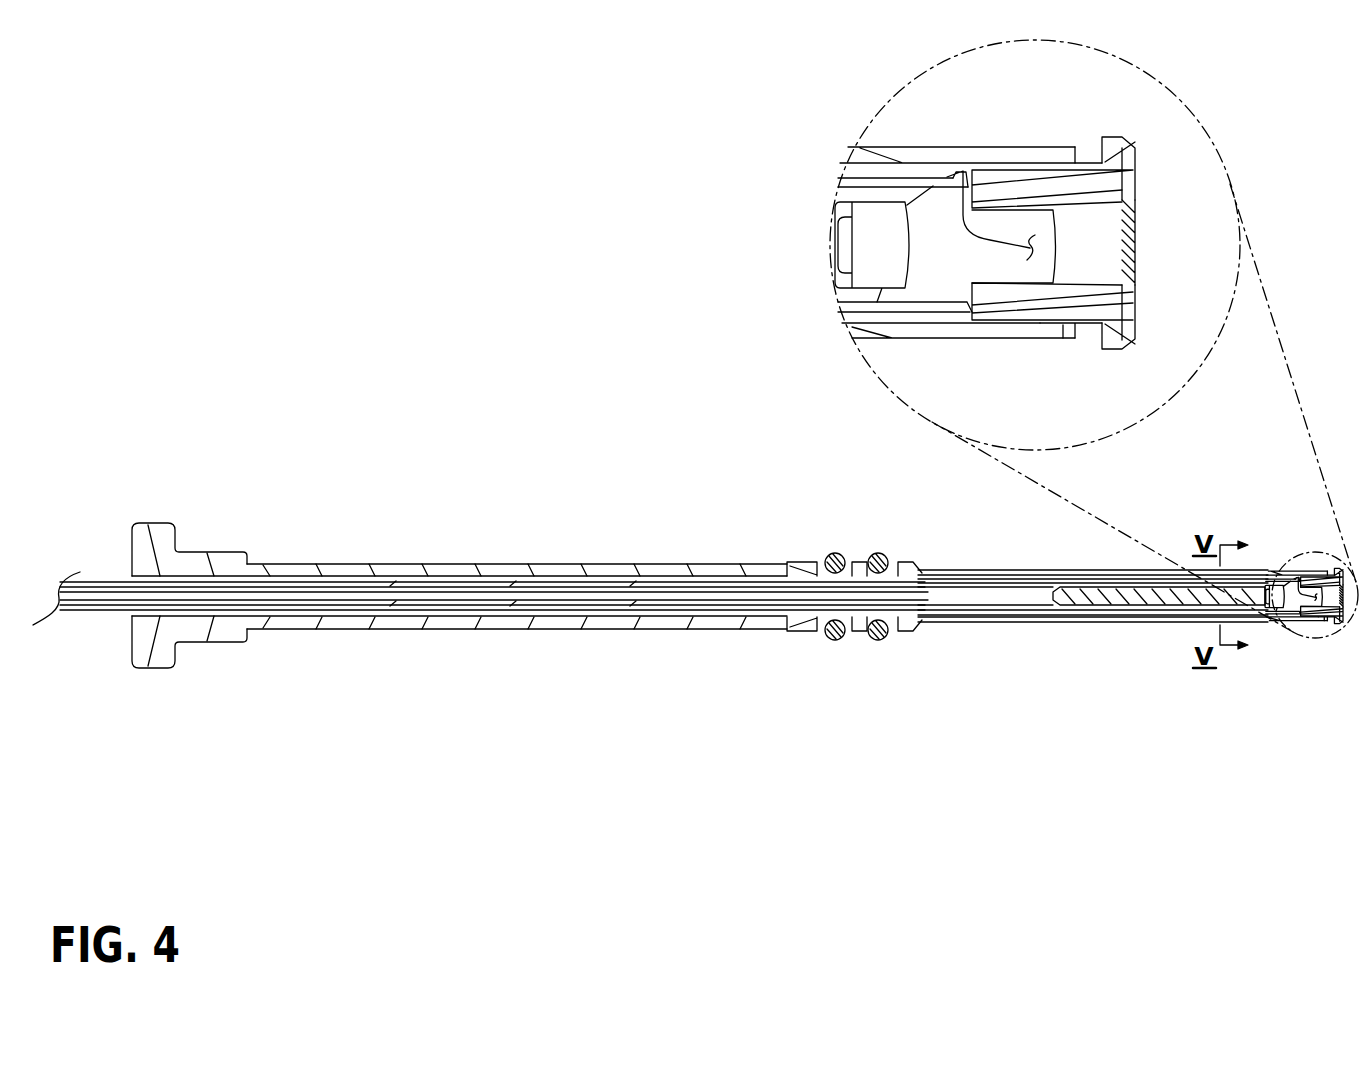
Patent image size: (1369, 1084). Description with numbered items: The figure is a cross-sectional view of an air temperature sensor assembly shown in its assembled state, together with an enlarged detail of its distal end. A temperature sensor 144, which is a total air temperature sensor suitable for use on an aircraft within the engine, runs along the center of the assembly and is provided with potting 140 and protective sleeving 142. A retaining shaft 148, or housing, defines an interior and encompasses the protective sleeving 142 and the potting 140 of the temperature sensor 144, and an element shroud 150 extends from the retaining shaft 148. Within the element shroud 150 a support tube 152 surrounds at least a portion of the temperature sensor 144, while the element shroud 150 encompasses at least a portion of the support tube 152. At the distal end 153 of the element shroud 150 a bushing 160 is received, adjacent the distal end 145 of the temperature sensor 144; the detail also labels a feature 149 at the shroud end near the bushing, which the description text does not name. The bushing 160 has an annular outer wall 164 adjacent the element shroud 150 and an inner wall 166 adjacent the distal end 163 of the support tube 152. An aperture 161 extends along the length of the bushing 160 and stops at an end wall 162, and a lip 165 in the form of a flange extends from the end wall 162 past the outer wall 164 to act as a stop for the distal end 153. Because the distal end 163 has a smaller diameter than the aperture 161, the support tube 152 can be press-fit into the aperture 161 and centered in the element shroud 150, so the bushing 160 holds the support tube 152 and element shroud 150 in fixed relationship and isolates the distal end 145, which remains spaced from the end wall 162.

The potting 140 is at (600, 588).
The protective sleeving 142 is at (672, 598).
The temperature sensor 144 is at (1112, 593).
The distal end 145 is at (868, 245).
The retaining shaft 148 is at (447, 570).
The lip 149 is at (1073, 157).
The element shroud 150 is at (997, 575).
The support tube 152 is at (1047, 578).
The distal end 153 is at (1060, 338).
The bushing 160 is at (1143, 352).
The aperture 161 is at (955, 177).
The end wall 162 is at (1133, 180).
The distal end 163 is at (980, 267).
The annular outer wall 164 is at (1050, 328).
The lip 165 is at (1102, 140).
The inner wall 166 is at (1110, 278).